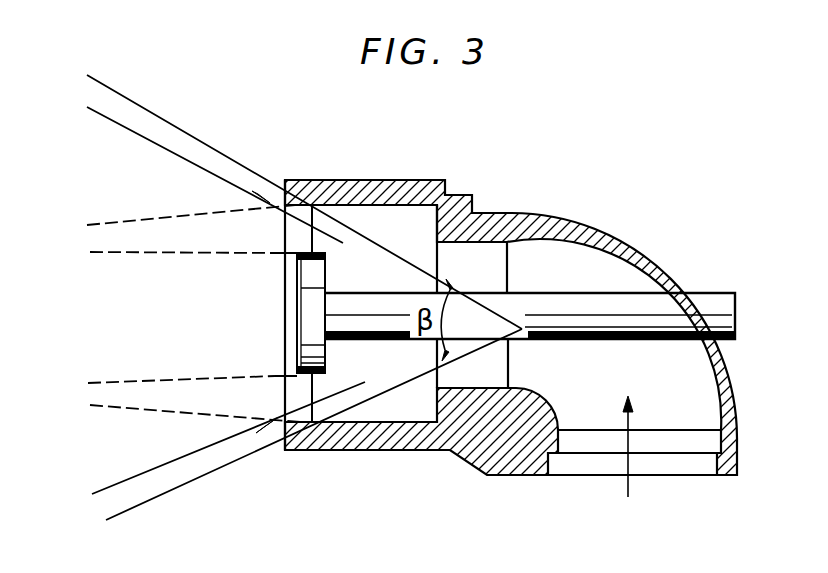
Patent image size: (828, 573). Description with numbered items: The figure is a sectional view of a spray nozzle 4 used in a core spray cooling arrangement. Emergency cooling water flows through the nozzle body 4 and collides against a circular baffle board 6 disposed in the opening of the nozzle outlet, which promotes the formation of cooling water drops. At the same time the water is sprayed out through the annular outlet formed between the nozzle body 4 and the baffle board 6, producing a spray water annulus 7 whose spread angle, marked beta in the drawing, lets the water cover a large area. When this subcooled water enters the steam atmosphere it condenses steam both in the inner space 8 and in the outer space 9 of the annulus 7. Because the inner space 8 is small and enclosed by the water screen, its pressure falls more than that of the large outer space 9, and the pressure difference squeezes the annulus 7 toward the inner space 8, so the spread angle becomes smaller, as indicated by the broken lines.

The spray nozzle 4 is at (367, 178).
The circular baffle board 6 is at (297, 318).
The spray water annulus 7 is at (183, 150).
The inner space 8 is at (147, 302).
The outer space 9 is at (157, 510).